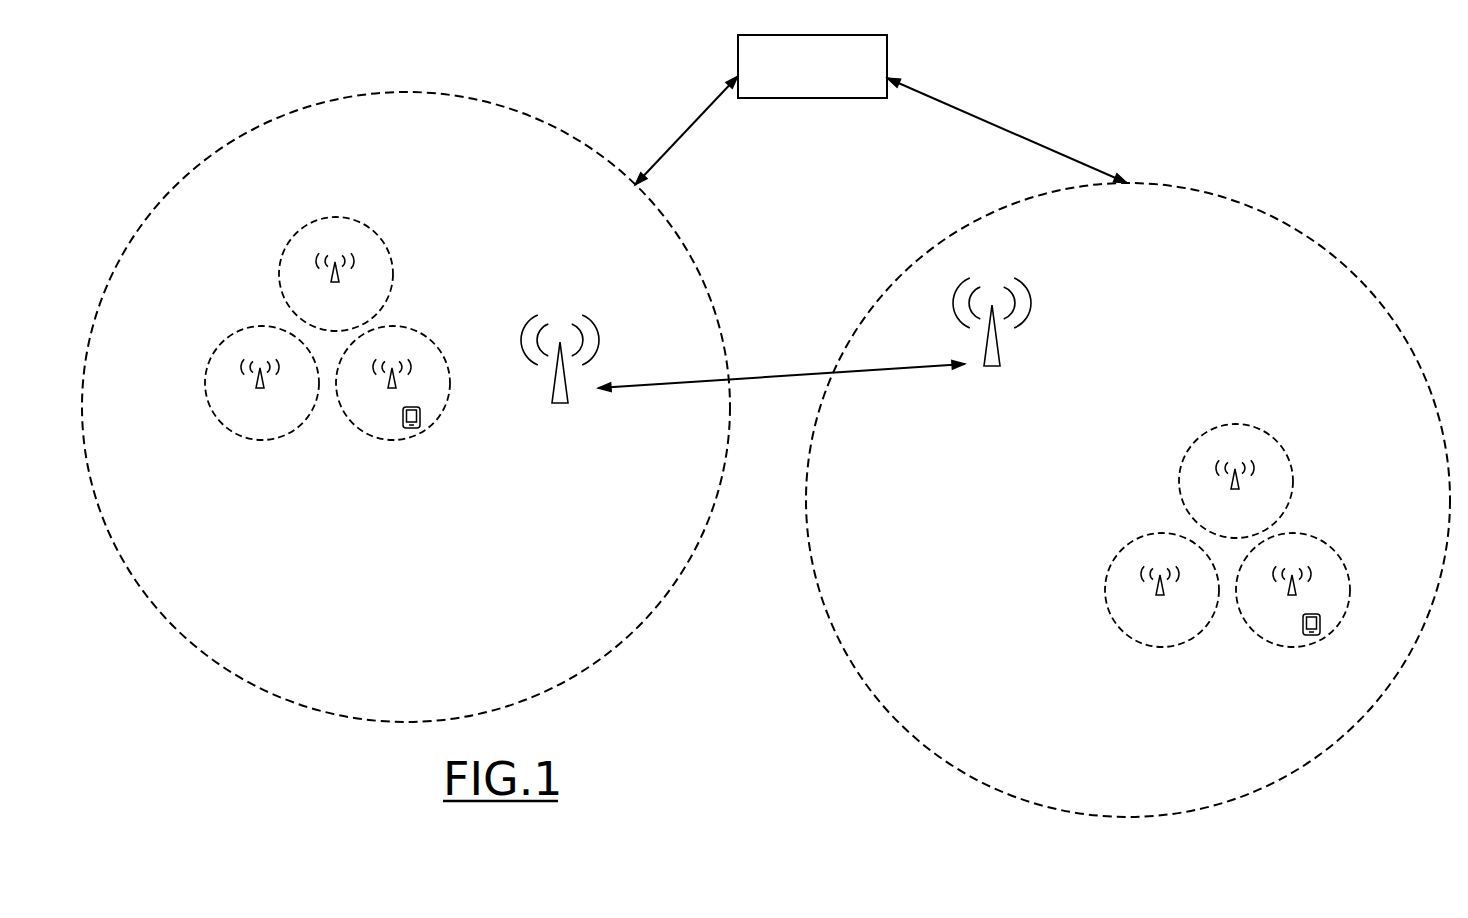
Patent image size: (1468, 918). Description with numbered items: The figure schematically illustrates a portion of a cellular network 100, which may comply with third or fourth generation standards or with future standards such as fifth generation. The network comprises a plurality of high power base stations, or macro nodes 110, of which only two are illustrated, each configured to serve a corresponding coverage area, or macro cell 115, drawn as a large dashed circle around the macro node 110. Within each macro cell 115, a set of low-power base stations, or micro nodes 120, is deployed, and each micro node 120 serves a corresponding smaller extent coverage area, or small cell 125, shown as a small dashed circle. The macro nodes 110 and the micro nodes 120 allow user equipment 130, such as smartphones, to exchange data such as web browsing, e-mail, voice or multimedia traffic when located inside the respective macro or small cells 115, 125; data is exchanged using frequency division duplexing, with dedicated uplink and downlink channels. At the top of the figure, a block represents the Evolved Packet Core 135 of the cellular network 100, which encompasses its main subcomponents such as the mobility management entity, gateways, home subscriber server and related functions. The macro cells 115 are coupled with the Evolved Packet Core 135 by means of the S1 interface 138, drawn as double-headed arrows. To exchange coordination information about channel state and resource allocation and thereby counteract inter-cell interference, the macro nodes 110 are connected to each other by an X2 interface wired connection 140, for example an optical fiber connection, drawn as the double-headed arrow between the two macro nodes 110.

The cellular network 100 is at (1336, 129).
The macro node 110 is at (558, 404).
The macro cell 115 is at (195, 645).
The micro node 120 is at (331, 272).
The small cell 125 is at (325, 218).
The user equipment 130 is at (412, 429).
The Evolved Packet Core 135 is at (812, 66).
The S1 interface 138 is at (693, 121).
The X2 interface wired connection 140 is at (790, 376).